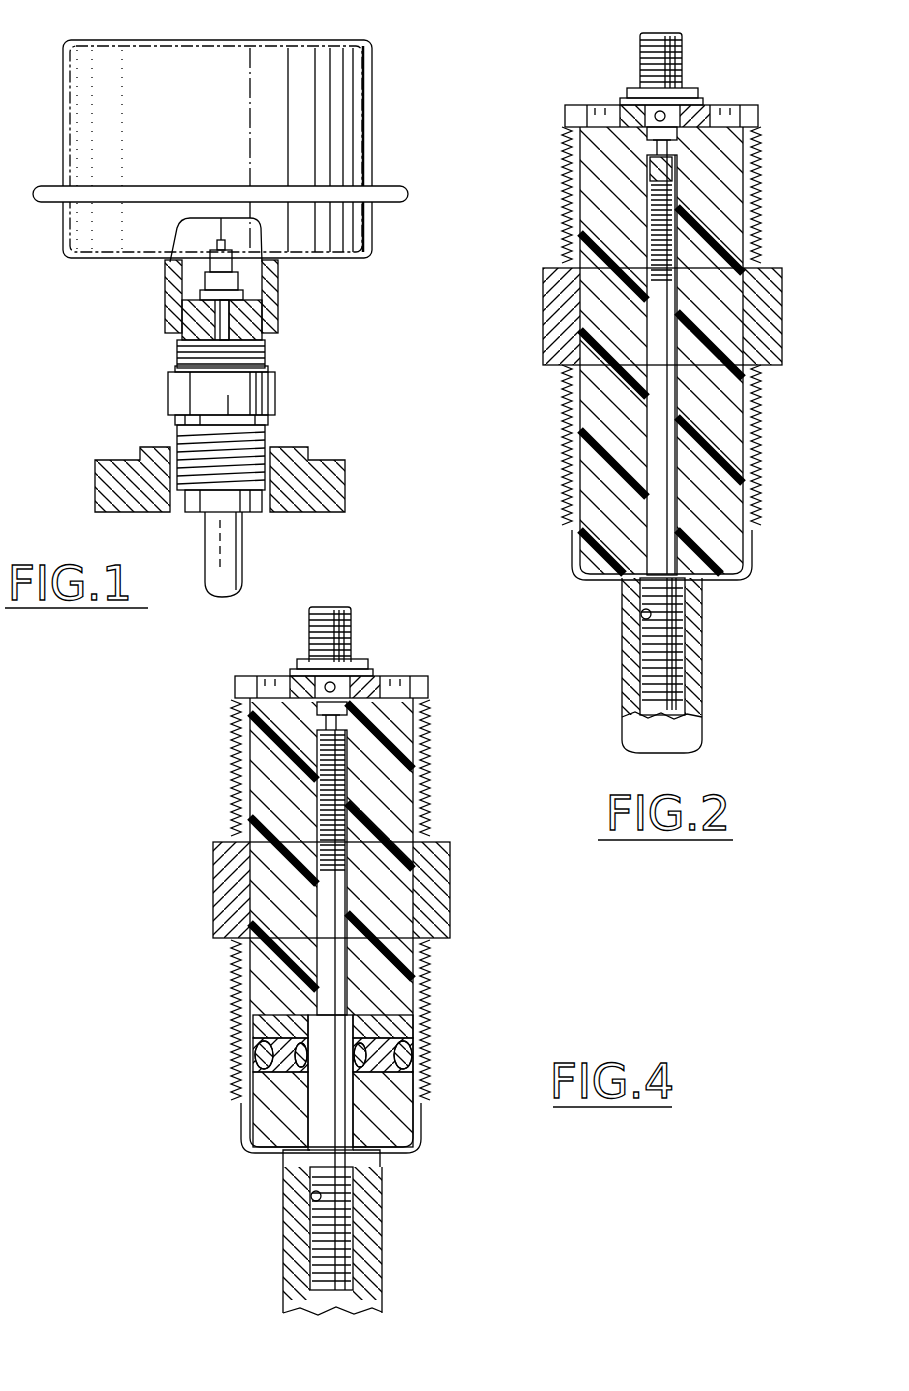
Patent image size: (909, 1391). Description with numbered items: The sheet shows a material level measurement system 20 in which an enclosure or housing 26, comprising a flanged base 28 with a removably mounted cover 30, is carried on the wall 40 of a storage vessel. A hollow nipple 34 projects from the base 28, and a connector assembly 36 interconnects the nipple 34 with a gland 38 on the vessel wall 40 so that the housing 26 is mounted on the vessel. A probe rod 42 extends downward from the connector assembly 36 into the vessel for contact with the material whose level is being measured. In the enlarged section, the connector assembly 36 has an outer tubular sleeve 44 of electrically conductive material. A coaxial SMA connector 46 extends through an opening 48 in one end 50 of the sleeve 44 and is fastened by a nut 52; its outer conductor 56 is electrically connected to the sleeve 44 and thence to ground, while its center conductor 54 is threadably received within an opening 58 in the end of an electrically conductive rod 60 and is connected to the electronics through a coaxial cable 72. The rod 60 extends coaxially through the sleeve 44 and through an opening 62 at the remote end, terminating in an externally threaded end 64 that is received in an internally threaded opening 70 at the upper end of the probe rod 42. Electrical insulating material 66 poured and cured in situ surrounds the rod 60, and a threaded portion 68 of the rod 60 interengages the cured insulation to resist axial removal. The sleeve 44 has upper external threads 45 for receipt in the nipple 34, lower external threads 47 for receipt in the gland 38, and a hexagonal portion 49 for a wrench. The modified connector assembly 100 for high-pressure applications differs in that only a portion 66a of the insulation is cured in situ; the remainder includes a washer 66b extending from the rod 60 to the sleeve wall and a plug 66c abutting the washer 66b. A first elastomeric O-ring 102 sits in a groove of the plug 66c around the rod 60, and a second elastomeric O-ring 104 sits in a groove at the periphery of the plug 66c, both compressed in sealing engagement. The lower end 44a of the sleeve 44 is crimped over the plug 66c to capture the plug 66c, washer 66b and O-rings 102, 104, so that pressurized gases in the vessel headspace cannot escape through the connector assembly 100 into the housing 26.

In FIG. 1, the system 20 is at (405, 58).
In FIG. 1, the housing 26 is at (375, 122).
In FIG. 1, the flanged base 28 is at (375, 232).
In FIG. 1, the cover 30 is at (226, 55).
In FIG. 1, the hollow nipple 34 is at (280, 283).
In FIG. 1, the connector assembly 36 is at (282, 383).
In FIG. 2, the connector assembly 36 is at (788, 306).
In FIG. 1, the gland 38 is at (270, 452).
In FIG. 1, the vessel wall 40 is at (334, 460).
In FIG. 1, the probe rod 42 is at (238, 567).
In FIG. 2, the probe rod 42 is at (697, 710).
In FIG. 4, the probe rod 42 is at (372, 1240).
In FIG. 2, the outer tubular sleeve 44 is at (754, 262).
In FIG. 4, the outer tubular sleeve 44 is at (428, 837).
In FIG. 4, the lower end of sleeve 44a is at (385, 1145).
In FIG. 1, the external threads 45 is at (278, 318).
In FIG. 2, the external threads 45 is at (568, 127).
In FIG. 4, the external threads 45 is at (425, 718).
In FIG. 1, the coaxial SMA connector 46 is at (233, 275).
In FIG. 2, the coaxial SMA connector 46 is at (686, 63).
In FIG. 4, the coaxial SMA connector 46 is at (354, 617).
In FIG. 1, the external threads 47 is at (204, 478).
In FIG. 2, the external threads 47 is at (580, 444).
In FIG. 4, the external threads 47 is at (427, 1037).
In FIG. 2, the opening 48 is at (712, 109).
In FIG. 1, the hexagonal portion 49 is at (176, 388).
In FIG. 2, the hexagonal portion 49 is at (553, 323).
In FIG. 2, the end of sleeve 50 is at (749, 109).
In FIG. 4, the end of sleeve 50 is at (368, 690).
In FIG. 2, the nut 52 is at (626, 88).
In FIG. 4, the nut 52 is at (353, 659).
In FIG. 2, the center conductor 54 is at (668, 148).
In FIG. 4, the center conductor 54 is at (330, 724).
In FIG. 2, the outer conductor 56 is at (684, 43).
In FIG. 4, the outer conductor 56 is at (313, 628).
In FIG. 2, the opening 58 is at (653, 172).
In FIG. 1, the conductive rod 60 is at (222, 338).
In FIG. 2, the conductive rod 60 is at (667, 407).
In FIG. 4, the conductive rod 60 is at (340, 905).
In FIG. 2, the opening 62 is at (728, 578).
In FIG. 4, the opening 62 is at (262, 1148).
In FIG. 2, the externally threaded end 64 is at (683, 652).
In FIG. 4, the externally threaded end 64 is at (320, 1258).
In FIG. 2, the electrical insulating material 66 is at (732, 464).
In FIG. 4, the insulating material portion 66a is at (398, 792).
In FIG. 4, the washer 66b is at (398, 1025).
In FIG. 4, the plug 66c is at (393, 1117).
In FIG. 2, the threaded portion 68 is at (673, 204).
In FIG. 4, the threaded portion 68 is at (325, 807).
In FIG. 2, the internally threaded opening 70 is at (645, 620).
In FIG. 4, the internally threaded opening 70 is at (312, 1204).
In FIG. 1, the coaxial cable 72 is at (218, 229).
In FIG. 4, the modified connector assembly 100 is at (467, 868).
In FIG. 4, the first elastomeric O-ring 102 is at (303, 1050).
In FIG. 4, the second elastomeric O-ring 104 is at (257, 1053).